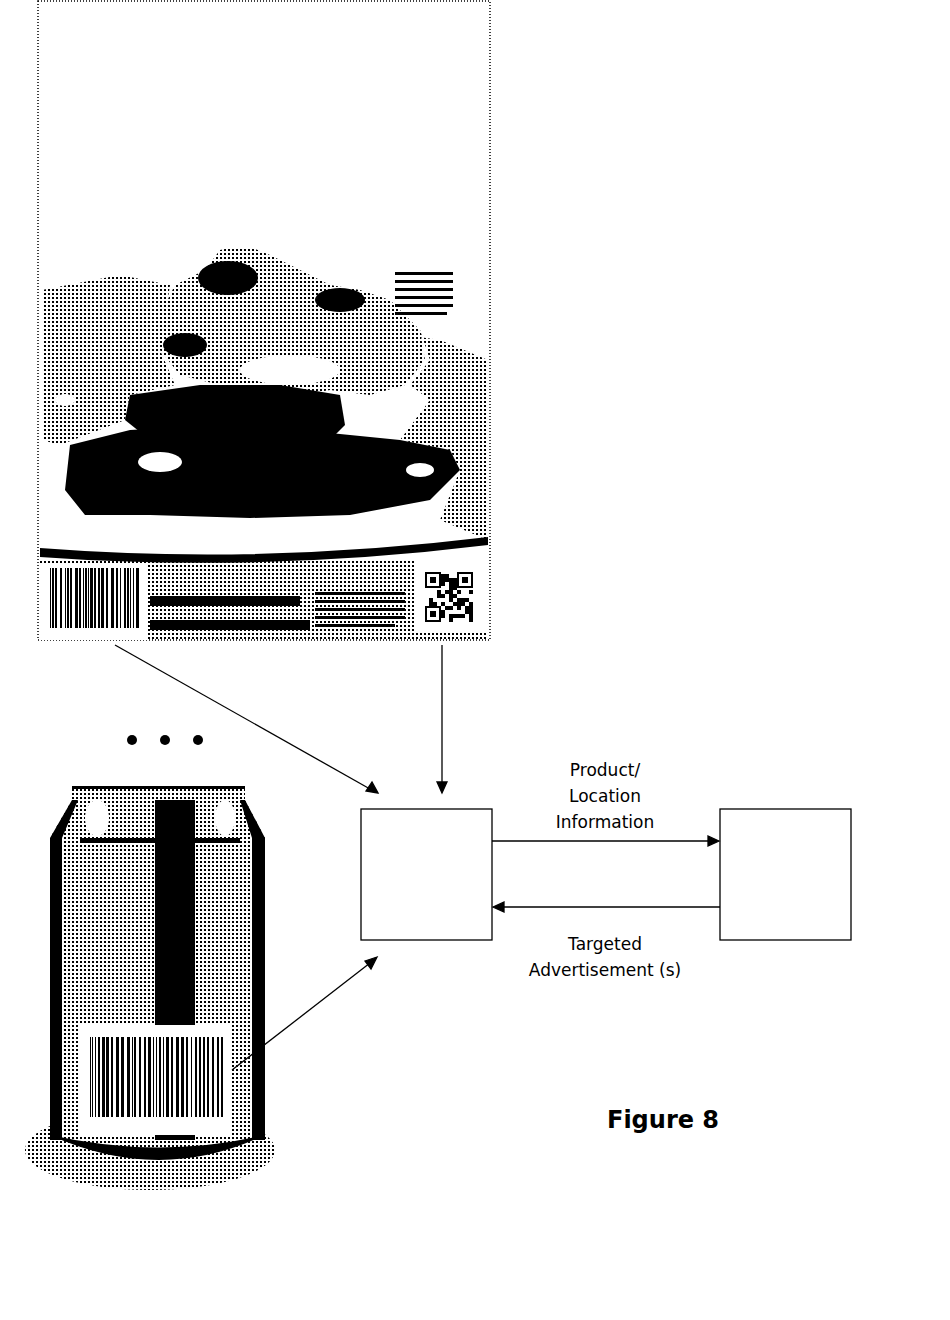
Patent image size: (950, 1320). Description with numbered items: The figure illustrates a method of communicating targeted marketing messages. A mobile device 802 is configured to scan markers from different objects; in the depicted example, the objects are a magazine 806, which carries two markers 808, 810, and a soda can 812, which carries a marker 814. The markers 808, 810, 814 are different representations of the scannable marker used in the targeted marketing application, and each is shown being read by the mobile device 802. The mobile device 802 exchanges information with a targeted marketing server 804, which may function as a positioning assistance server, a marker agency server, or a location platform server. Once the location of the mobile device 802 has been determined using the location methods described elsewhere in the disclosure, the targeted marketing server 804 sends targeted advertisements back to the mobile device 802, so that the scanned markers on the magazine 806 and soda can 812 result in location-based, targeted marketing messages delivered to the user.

The mobile device 802 is at (425, 940).
The targeted marketing server 804 is at (793, 940).
The magazine 806 is at (306, 353).
The marker 808 is at (470, 590).
The marker 810 is at (72, 612).
The soda can 812 is at (166, 1009).
The marker 814 is at (200, 1118).